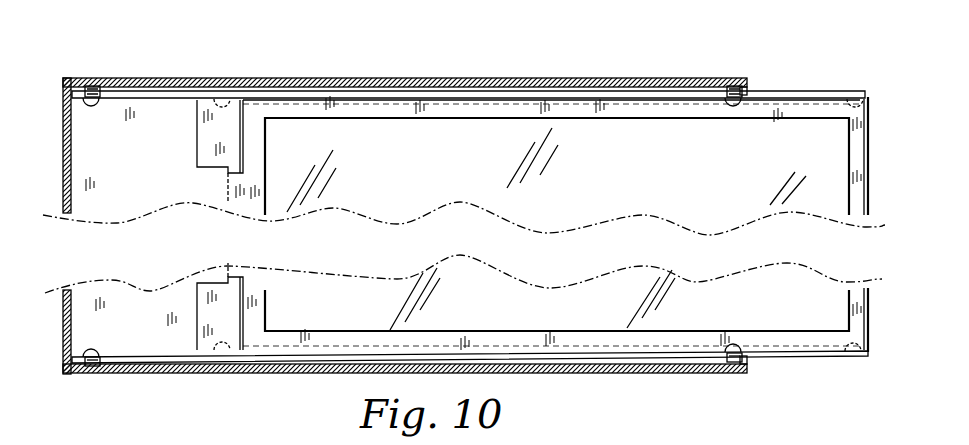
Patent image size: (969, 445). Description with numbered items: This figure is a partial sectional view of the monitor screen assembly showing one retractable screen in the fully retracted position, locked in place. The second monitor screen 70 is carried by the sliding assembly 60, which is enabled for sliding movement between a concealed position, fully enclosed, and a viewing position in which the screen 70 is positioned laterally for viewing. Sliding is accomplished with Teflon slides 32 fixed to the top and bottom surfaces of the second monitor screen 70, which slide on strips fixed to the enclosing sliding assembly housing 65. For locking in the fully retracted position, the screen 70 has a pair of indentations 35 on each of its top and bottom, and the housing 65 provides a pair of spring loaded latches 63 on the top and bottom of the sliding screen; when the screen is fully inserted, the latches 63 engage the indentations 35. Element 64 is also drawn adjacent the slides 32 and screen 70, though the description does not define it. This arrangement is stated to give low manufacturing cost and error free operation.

The slides 32 is at (768, 91).
The indentations 35 is at (221, 98).
The sliding assembly 60 is at (862, 147).
The spring loaded latches 63 is at (92, 86).
The gasket 64 is at (320, 103).
The sliding assembly housing 65 is at (207, 137).
The second monitor screen 70 is at (688, 171).